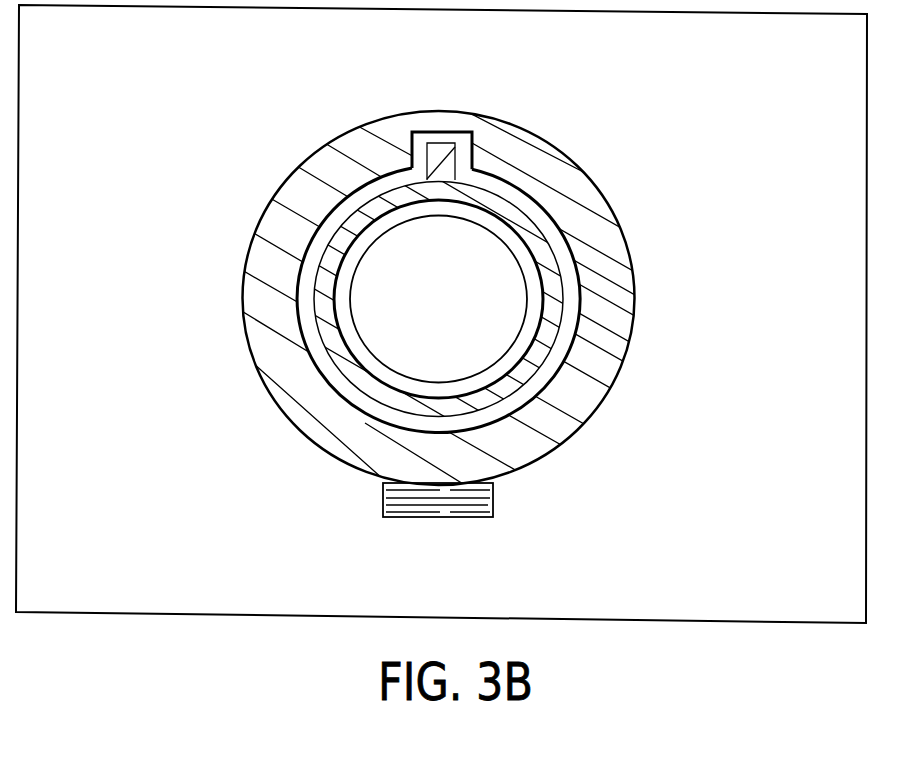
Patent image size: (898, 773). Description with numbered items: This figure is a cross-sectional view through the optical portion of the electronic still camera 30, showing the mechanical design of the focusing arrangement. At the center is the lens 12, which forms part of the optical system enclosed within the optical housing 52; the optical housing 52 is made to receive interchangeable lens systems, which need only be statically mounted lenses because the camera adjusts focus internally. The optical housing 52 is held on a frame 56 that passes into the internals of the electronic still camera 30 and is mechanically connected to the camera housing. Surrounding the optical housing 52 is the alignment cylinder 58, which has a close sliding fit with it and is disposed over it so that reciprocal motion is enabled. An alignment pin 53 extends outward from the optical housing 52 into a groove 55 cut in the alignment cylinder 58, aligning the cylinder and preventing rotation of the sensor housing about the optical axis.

The electronic still camera 30 is at (746, 78).
The alignment cylinder 58 is at (505, 148).
The groove 55 is at (442, 106).
The alignment pin 53 is at (408, 146).
The optical housing 52 is at (556, 229).
The lens 12 is at (505, 319).
The frame 56 is at (493, 500).